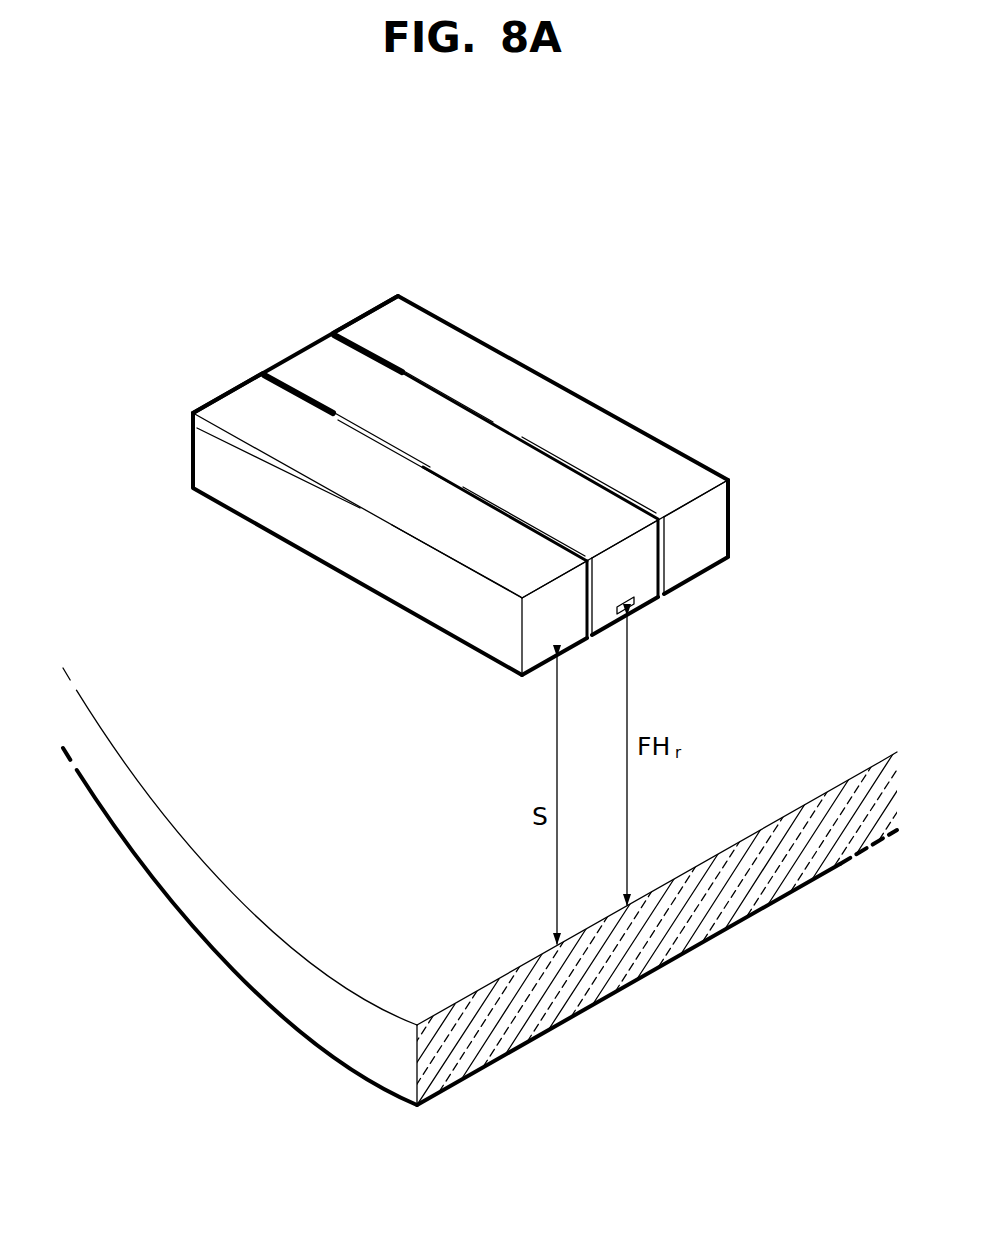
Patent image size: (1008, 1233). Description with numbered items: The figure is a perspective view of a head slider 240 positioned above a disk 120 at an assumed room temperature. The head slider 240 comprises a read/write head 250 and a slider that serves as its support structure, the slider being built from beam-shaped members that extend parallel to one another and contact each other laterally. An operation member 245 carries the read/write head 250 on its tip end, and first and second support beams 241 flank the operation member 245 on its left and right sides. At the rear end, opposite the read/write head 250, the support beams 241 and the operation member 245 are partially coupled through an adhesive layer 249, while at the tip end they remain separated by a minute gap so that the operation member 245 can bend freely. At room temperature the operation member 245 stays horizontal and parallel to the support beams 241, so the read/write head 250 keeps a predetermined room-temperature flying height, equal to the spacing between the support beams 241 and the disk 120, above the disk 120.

The disk 120 is at (317, 1021).
The head slider 240 is at (590, 371).
The support beam 241 is at (393, 313).
The operation member 245 is at (323, 357).
The adhesive layer 249 is at (270, 368).
The read/write head 250 is at (633, 613).